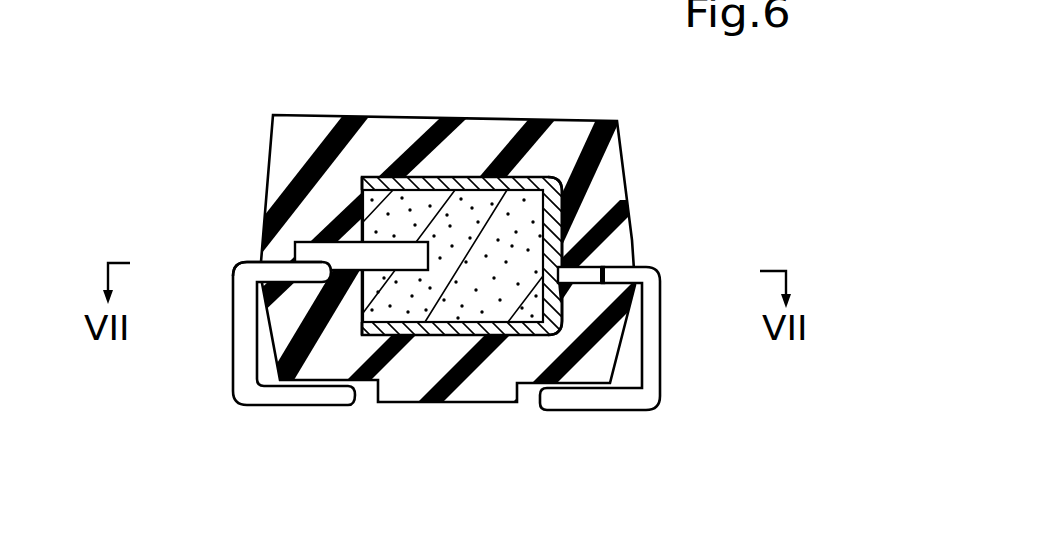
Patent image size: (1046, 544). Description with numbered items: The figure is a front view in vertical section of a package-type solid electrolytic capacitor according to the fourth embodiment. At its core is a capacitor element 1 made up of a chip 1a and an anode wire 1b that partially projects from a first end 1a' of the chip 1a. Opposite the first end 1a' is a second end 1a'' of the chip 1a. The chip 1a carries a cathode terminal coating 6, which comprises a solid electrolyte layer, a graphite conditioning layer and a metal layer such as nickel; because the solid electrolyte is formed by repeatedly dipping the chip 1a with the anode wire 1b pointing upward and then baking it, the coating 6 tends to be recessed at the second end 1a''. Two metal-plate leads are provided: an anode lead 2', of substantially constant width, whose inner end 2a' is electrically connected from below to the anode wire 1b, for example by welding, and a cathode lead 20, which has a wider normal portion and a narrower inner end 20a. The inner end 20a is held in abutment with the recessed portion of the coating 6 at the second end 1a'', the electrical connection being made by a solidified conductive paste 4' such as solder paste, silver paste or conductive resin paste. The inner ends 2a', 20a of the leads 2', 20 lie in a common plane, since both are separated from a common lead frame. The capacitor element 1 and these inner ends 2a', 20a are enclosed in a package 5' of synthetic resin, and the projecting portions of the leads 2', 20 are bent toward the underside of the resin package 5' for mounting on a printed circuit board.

The capacitor element 1 is at (432, 164).
The chip 1a is at (453, 170).
The first end of the chip 1a' is at (306, 324).
The second end of the chip 1a'' is at (455, 197).
The anode wire 1b is at (307, 241).
The anode lead 2' is at (260, 283).
The inner end of the anode lead 2a' is at (249, 170).
The solidified conductive paste 4' is at (629, 191).
The package 5' is at (422, 218).
The cathode terminal coating 6 is at (560, 180).
The cathode lead 20 is at (655, 282).
The inner end of the cathode lead 20a is at (577, 288).